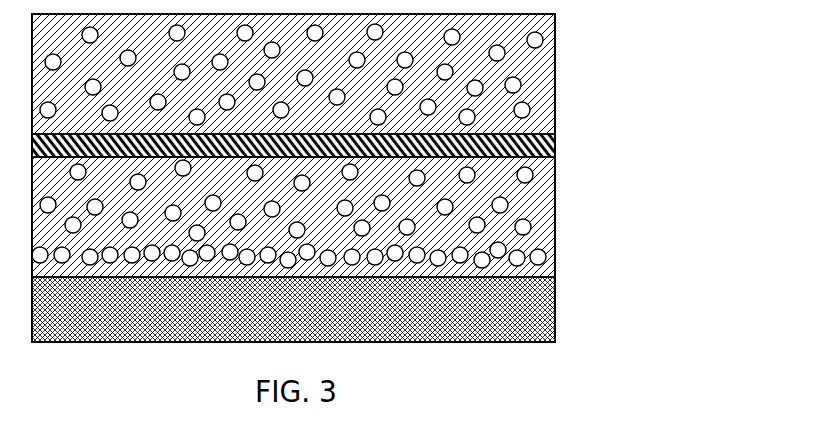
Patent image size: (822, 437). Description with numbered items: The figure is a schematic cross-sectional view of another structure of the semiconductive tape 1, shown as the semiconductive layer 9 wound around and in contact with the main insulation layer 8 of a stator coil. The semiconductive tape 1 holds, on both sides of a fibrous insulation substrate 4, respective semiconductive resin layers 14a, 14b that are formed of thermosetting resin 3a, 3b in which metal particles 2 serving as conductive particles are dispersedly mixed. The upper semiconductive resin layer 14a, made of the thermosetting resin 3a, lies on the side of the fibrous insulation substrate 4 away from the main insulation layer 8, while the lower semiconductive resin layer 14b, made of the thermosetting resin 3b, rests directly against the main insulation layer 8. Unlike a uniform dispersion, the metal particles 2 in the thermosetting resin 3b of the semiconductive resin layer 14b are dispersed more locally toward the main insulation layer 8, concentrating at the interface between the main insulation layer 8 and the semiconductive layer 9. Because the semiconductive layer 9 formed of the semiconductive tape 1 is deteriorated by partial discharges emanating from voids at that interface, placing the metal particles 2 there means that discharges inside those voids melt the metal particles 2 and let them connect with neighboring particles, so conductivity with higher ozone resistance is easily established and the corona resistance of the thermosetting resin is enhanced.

The semiconductive tape 1 is at (720, 17).
The semiconductive layer 9 is at (417, 178).
The metal particles 2 is at (543, 39).
The thermosetting resin 3a is at (535, 84).
The thermosetting resin 3b is at (538, 232).
The fibrous insulation substrate 4 is at (555, 143).
The main insulation layer 8 is at (537, 307).
The semiconductive resin layer 14a is at (638, 15).
The semiconductive resin layer 14b is at (638, 162).